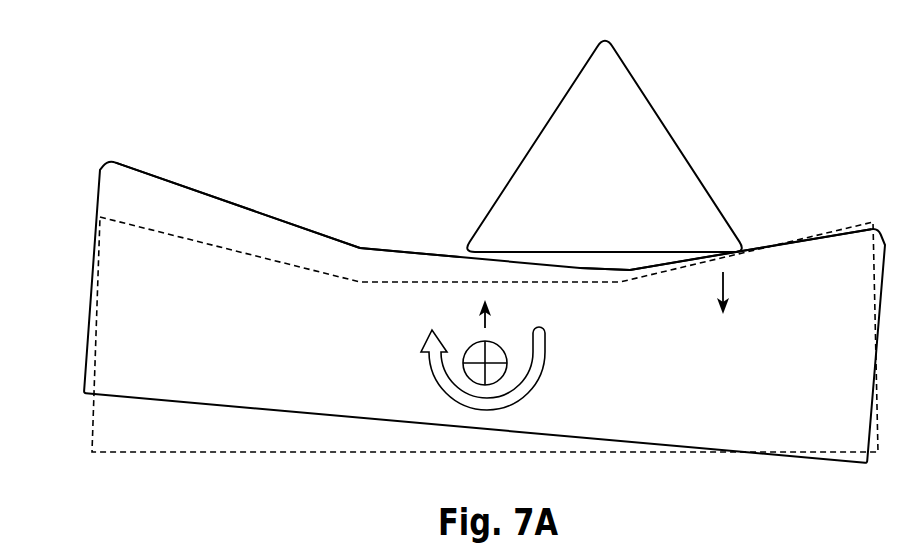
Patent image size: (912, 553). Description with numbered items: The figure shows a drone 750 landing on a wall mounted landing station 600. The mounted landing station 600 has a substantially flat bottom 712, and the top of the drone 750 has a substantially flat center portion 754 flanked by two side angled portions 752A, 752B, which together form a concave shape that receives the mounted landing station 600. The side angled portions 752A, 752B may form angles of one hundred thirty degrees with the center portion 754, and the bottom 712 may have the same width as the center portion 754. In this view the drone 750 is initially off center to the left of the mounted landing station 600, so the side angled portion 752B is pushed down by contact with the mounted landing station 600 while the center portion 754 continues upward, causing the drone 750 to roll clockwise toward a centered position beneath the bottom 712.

The drone 750 is at (82, 179).
The side angled portion 752A is at (267, 213).
The side angled portion 752B is at (857, 228).
The center portion 754 is at (415, 252).
The bottom 712 is at (608, 250).
The wall mounted landing station 600 is at (541, 76).